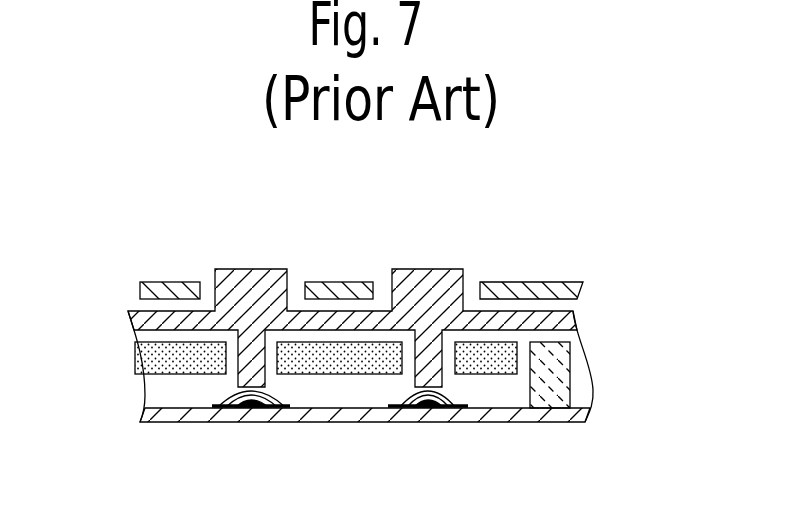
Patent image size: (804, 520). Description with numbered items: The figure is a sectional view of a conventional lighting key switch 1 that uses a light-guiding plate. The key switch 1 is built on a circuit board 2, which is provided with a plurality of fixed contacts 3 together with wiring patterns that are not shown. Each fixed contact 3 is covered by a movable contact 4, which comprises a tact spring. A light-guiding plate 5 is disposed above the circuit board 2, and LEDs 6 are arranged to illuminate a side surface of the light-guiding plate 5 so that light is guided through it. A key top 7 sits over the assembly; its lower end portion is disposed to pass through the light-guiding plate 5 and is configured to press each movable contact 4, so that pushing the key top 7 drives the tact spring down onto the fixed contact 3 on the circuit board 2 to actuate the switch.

The key switch 1 is at (593, 268).
The circuit board 2 is at (385, 421).
The fixed contact 3 is at (260, 406).
The movable contact 4 is at (240, 403).
The light-guiding plate 5 is at (143, 356).
The LED 6 is at (567, 368).
The key top 7 is at (250, 269).